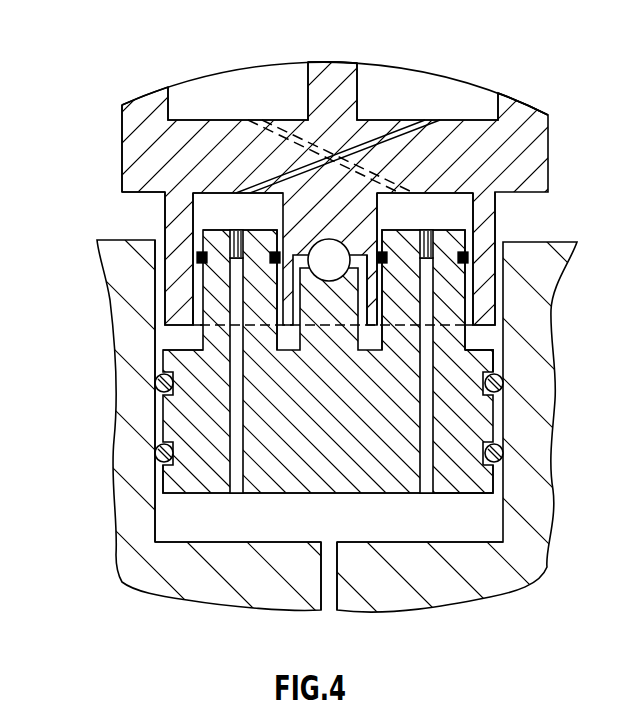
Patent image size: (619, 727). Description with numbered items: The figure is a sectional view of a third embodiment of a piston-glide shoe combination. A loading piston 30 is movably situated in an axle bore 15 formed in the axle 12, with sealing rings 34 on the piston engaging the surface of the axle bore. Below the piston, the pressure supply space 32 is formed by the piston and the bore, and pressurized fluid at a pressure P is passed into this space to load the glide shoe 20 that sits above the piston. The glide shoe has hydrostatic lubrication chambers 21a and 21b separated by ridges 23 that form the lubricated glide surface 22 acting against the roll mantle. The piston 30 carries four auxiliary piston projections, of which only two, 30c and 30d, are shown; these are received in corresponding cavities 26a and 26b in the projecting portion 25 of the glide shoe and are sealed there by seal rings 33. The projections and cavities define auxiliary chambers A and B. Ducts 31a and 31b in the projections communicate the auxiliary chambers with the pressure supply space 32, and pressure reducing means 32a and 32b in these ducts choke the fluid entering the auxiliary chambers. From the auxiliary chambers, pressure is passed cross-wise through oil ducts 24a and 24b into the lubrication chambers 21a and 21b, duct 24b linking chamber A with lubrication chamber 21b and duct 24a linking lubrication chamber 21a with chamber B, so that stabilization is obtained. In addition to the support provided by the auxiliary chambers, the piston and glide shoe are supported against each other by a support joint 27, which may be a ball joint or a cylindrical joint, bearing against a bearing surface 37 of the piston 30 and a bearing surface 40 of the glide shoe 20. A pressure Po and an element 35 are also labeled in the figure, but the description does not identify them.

The axle 12 is at (117, 370).
The axle bore 15 is at (153, 496).
The glide shoe 20 is at (548, 185).
The hydrostatic lubrication chamber 21a is at (213, 90).
The hydrostatic lubrication chamber 21b is at (452, 97).
The lubricated glide surface 22 is at (326, 60).
The ridges 23 is at (148, 105).
The oil duct 24a is at (258, 122).
The oil duct 24b is at (378, 143).
The projecting portion of glide shoe 25 is at (172, 310).
The cavity 26a is at (202, 323).
The cavity 26b is at (468, 292).
The support joint 27 is at (320, 269).
The loading piston 30 is at (363, 483).
The auxiliary piston projection 30c is at (210, 302).
The auxiliary piston projection 30d is at (453, 338).
The duct 31a is at (236, 494).
The duct 31b is at (423, 486).
The pressure supply space 32 is at (198, 528).
The pressure reducing means 32a is at (248, 228).
The pressure reducing means 32b is at (447, 228).
The seal rings 33 is at (197, 260).
The sealing rings 34 is at (155, 452).
The piston lower part 35 is at (463, 485).
The bearing surface of piston 37 is at (452, 326).
The bearing surface of glide shoe 40 is at (340, 238).
The pressure Po is at (165, 198).
The auxiliary chamber A is at (203, 213).
The auxiliary chamber B is at (472, 220).
The pressure P is at (180, 515).